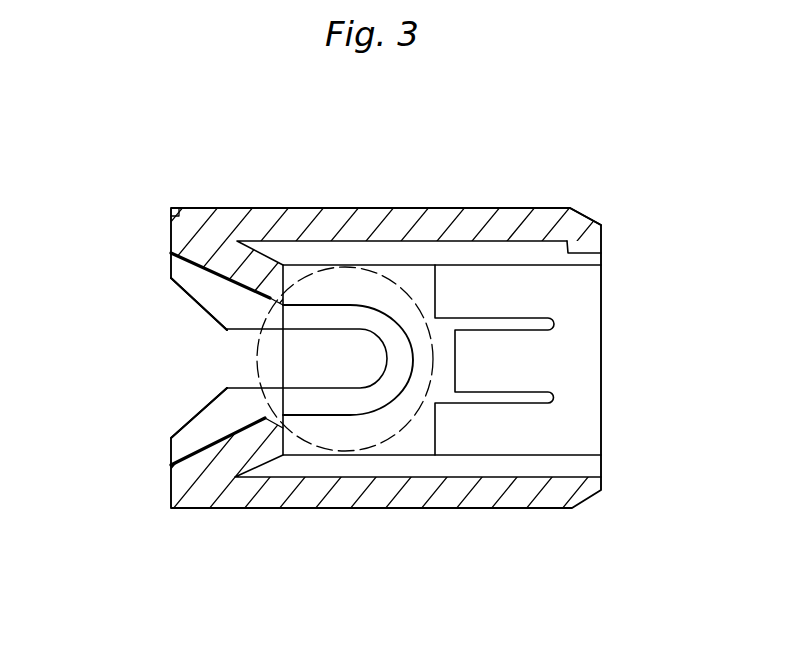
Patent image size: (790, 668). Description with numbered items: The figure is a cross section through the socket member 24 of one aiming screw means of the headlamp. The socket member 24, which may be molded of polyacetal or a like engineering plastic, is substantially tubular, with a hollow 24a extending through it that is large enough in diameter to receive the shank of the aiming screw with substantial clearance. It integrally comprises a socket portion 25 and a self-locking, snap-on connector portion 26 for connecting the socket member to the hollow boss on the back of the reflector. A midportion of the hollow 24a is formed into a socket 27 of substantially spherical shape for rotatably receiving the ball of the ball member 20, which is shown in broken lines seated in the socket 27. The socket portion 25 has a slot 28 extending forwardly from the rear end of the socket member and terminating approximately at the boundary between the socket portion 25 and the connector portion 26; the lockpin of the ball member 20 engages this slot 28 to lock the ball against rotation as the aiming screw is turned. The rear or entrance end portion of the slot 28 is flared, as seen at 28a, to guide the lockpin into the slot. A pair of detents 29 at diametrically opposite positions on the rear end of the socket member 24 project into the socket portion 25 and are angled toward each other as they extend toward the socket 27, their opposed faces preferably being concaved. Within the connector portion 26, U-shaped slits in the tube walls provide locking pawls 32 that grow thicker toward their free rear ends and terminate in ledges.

The ball member 20 is at (385, 442).
The socket member 24 is at (513, 210).
The hollow 24a is at (603, 253).
The socket portion 25 is at (300, 240).
The self-locking, snap-on connector portion 26 is at (576, 225).
The socket 27 is at (360, 320).
The slot 28 is at (314, 329).
The flared entrance end portion of the slot 28a is at (200, 306).
The detents 29 is at (183, 288).
The locking pawls 32 is at (492, 380).